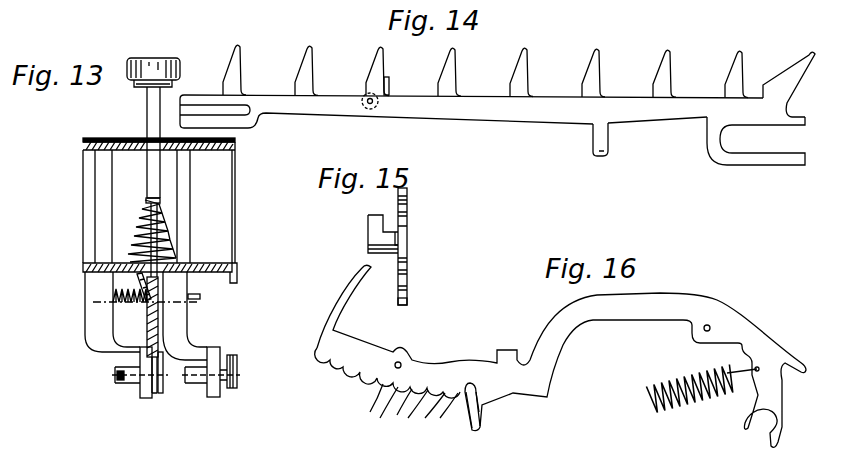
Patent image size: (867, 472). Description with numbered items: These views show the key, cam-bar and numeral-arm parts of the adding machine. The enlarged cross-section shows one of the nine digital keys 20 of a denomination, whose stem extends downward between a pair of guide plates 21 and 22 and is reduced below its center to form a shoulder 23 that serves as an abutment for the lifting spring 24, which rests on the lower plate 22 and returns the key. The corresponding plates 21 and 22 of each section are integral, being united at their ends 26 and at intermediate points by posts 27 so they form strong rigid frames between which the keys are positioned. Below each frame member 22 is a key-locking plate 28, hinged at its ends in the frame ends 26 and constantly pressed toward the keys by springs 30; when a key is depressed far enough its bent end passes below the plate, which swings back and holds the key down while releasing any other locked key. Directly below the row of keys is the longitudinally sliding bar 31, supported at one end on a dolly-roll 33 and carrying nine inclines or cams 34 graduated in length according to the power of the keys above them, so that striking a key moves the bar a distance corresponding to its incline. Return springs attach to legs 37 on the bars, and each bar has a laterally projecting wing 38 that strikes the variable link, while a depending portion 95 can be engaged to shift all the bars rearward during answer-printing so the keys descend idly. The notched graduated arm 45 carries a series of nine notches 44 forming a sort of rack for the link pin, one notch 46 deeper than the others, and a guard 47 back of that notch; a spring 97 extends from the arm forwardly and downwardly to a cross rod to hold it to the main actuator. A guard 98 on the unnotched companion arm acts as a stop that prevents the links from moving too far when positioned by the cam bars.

In FIG. 13, the digital key 20 is at (147, 107).
In FIG. 13, the guide plate 21 is at (83, 138).
In FIG. 13, the guide plate 22 is at (215, 265).
In FIG. 13, the shoulder 23 is at (148, 203).
In FIG. 13, the lifting spring 24 is at (163, 232).
In FIG. 13, the frame end 26 is at (188, 289).
In FIG. 13, the post 27 is at (182, 174).
In FIG. 13, the key-locking plate 28 is at (136, 282).
In FIG. 13, the spring 30 is at (123, 306).
In FIG. 14, the bar 31 is at (527, 118).
In FIG. 13, the dolly-roll 33 is at (160, 393).
In FIG. 13, the incline 34 is at (148, 326).
In FIG. 14, the incline 34 is at (368, 60).
In FIG. 15, the incline 34 is at (407, 202).
In FIG. 13, the leg 37 is at (150, 356).
In FIG. 14, the leg 37 is at (594, 148).
In FIG. 15, the leg 37 is at (407, 289).
In FIG. 14, the wing 38 is at (389, 78).
In FIG. 15, the wing 38 is at (369, 228).
In FIG. 16, the notch 44 is at (399, 407).
In FIG. 16, the numeral arm 45 is at (427, 365).
In FIG. 16, the deep notch 46 is at (467, 390).
In FIG. 16, the guard 47 is at (478, 432).
In FIG. 14, the depending portion 95 is at (708, 140).
In FIG. 15, the depending portion 95 is at (404, 302).
In FIG. 16, the spring 97 is at (690, 398).
In FIG. 14, the guard 98 is at (657, 0).